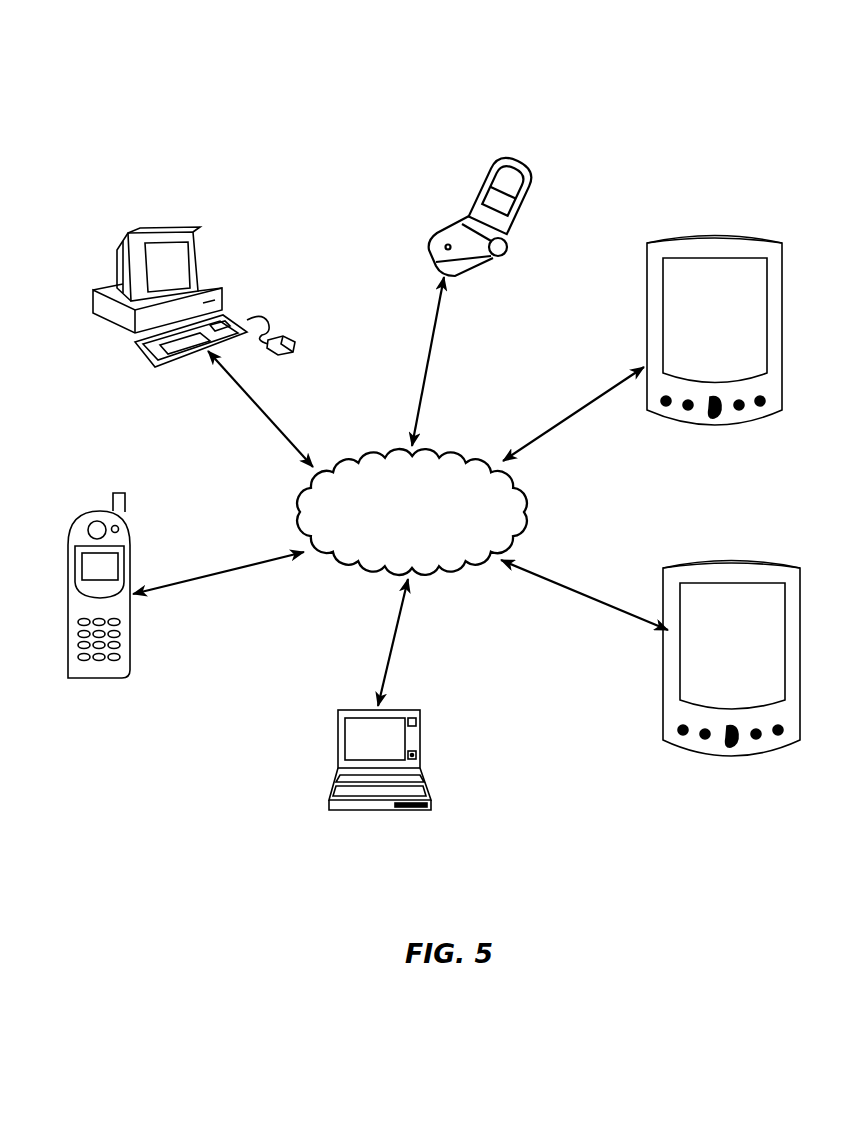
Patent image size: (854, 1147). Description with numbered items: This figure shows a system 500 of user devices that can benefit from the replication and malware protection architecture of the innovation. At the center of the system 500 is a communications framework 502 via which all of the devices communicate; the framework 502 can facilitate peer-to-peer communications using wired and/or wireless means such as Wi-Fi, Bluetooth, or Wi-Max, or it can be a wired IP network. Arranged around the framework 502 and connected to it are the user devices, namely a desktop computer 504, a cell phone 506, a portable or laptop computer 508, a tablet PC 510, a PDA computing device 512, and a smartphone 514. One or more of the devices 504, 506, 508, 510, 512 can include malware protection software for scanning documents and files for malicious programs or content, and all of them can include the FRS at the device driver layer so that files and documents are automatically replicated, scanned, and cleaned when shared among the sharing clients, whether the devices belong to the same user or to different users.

The system 500 is at (700, 47).
The communications framework 502 is at (533, 516).
The desktop computer 504 is at (176, 232).
The cell phone 506 is at (126, 495).
The portable (or laptop) computer 508 is at (414, 708).
The tablet PC 510 is at (730, 562).
The PDA computing device 512 is at (732, 230).
The smartphone 514 is at (516, 170).